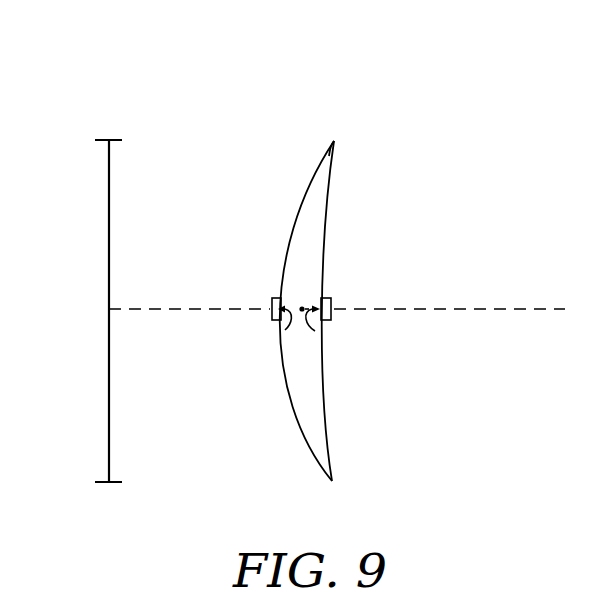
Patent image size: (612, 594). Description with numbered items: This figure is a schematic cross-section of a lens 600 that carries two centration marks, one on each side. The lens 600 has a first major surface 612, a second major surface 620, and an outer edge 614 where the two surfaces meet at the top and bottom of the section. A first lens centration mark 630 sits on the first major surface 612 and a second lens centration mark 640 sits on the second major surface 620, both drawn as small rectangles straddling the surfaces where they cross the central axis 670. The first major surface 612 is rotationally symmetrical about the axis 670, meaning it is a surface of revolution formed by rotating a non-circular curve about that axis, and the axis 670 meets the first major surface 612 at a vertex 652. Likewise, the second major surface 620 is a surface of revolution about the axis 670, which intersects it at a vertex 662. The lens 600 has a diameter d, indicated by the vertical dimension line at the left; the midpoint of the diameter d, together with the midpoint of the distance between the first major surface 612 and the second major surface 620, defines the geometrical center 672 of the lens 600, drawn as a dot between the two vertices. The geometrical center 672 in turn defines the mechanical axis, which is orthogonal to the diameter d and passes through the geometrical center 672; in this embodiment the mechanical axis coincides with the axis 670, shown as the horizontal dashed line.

The lens 600 is at (341, 296).
The first major surface 612 is at (312, 452).
The outer edge 614 is at (335, 140).
The second major surface 620 is at (328, 418).
The first lens centration mark 630 is at (271, 298).
The second lens centration mark 640 is at (334, 298).
The vertex 652 is at (285, 330).
The vertex 662 is at (315, 331).
The axis 670 is at (515, 308).
The geometrical center 672 is at (302, 312).
The diameter d is at (108, 205).